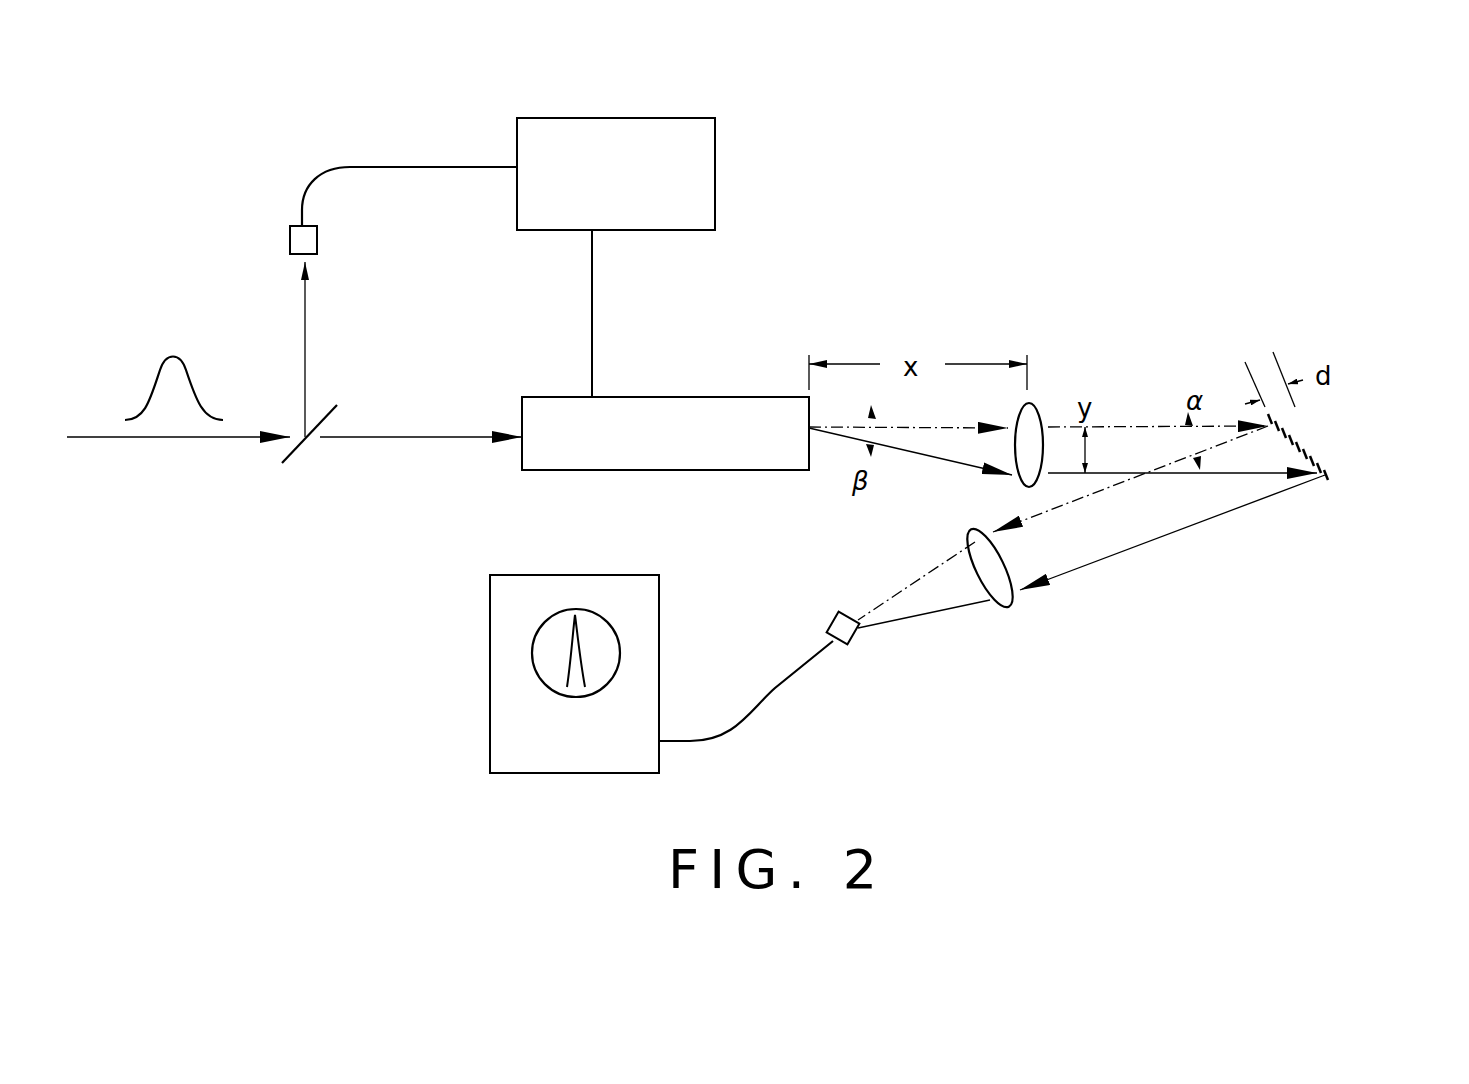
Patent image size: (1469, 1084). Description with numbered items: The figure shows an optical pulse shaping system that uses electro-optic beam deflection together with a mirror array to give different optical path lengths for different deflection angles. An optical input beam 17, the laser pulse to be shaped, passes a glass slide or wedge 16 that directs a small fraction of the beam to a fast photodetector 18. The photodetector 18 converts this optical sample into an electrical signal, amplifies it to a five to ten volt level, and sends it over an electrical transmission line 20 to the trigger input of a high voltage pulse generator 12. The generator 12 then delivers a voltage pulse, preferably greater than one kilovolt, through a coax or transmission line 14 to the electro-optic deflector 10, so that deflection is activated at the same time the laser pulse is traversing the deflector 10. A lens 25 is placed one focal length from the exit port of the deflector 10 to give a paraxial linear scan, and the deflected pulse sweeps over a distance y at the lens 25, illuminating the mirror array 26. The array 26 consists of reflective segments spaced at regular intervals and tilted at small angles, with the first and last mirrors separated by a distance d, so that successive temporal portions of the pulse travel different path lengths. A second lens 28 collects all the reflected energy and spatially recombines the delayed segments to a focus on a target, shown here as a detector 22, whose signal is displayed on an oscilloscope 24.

The electro-optic deflector 10 is at (675, 472).
The high voltage pulse generator 12 is at (645, 232).
The transmission line 14 is at (592, 357).
The glass slide or wedge 16 is at (335, 410).
The optical input beam 17 is at (85, 440).
The fast photodetector 18 is at (290, 236).
The electrical transmission line 20 is at (415, 165).
The detector 22 is at (835, 614).
The oscilloscope 24 is at (490, 748).
The lens 25 is at (1036, 405).
The mirror array 26 is at (1318, 437).
The second lens 28 is at (1012, 605).